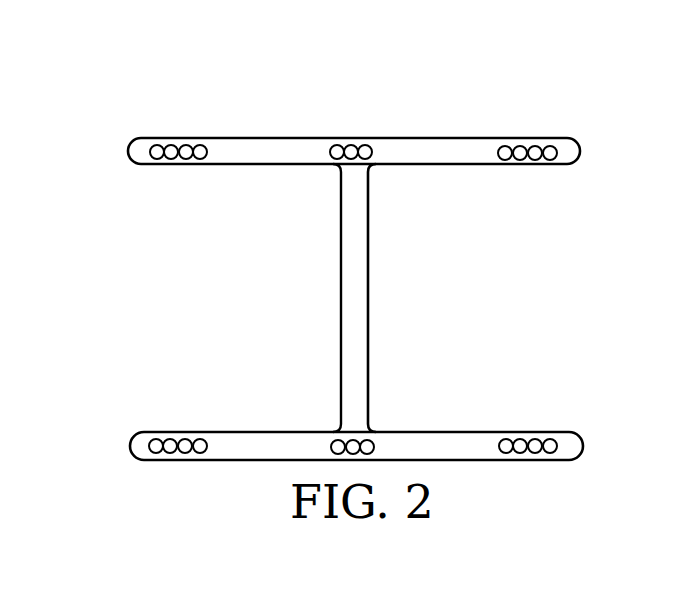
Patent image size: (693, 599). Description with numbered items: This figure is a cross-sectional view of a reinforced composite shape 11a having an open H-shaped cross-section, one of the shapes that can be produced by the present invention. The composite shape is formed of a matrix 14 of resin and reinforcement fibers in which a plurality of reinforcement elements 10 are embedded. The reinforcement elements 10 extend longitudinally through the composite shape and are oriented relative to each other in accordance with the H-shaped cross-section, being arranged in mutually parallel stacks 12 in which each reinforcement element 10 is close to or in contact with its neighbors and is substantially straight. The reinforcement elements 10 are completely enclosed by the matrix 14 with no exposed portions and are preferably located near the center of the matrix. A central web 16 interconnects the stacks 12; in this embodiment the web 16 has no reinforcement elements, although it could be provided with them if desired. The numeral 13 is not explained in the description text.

The reinforcement element 10 is at (537, 150).
The reinforced composite shape 11a is at (363, 103).
The stack 12 is at (198, 168).
The upper flange 13 is at (240, 137).
The matrix 14 is at (452, 447).
The central web 16 is at (355, 289).